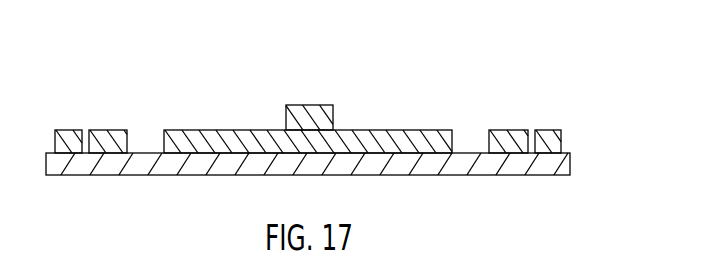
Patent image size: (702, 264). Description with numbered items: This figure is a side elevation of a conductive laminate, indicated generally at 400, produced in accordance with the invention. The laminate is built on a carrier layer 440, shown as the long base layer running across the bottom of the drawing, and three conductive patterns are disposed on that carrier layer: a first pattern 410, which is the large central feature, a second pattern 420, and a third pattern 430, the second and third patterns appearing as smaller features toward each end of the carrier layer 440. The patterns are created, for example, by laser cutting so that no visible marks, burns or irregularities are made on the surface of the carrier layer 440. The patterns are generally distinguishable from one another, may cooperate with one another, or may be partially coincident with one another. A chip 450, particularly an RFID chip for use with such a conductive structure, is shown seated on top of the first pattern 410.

The semiconductor device assembly 400 is at (456, 53).
The first pattern 410 is at (414, 131).
The second pattern 420 is at (102, 130).
The third pattern 430 is at (70, 130).
The carrier layer 440 is at (503, 175).
The chip 450 is at (307, 105).